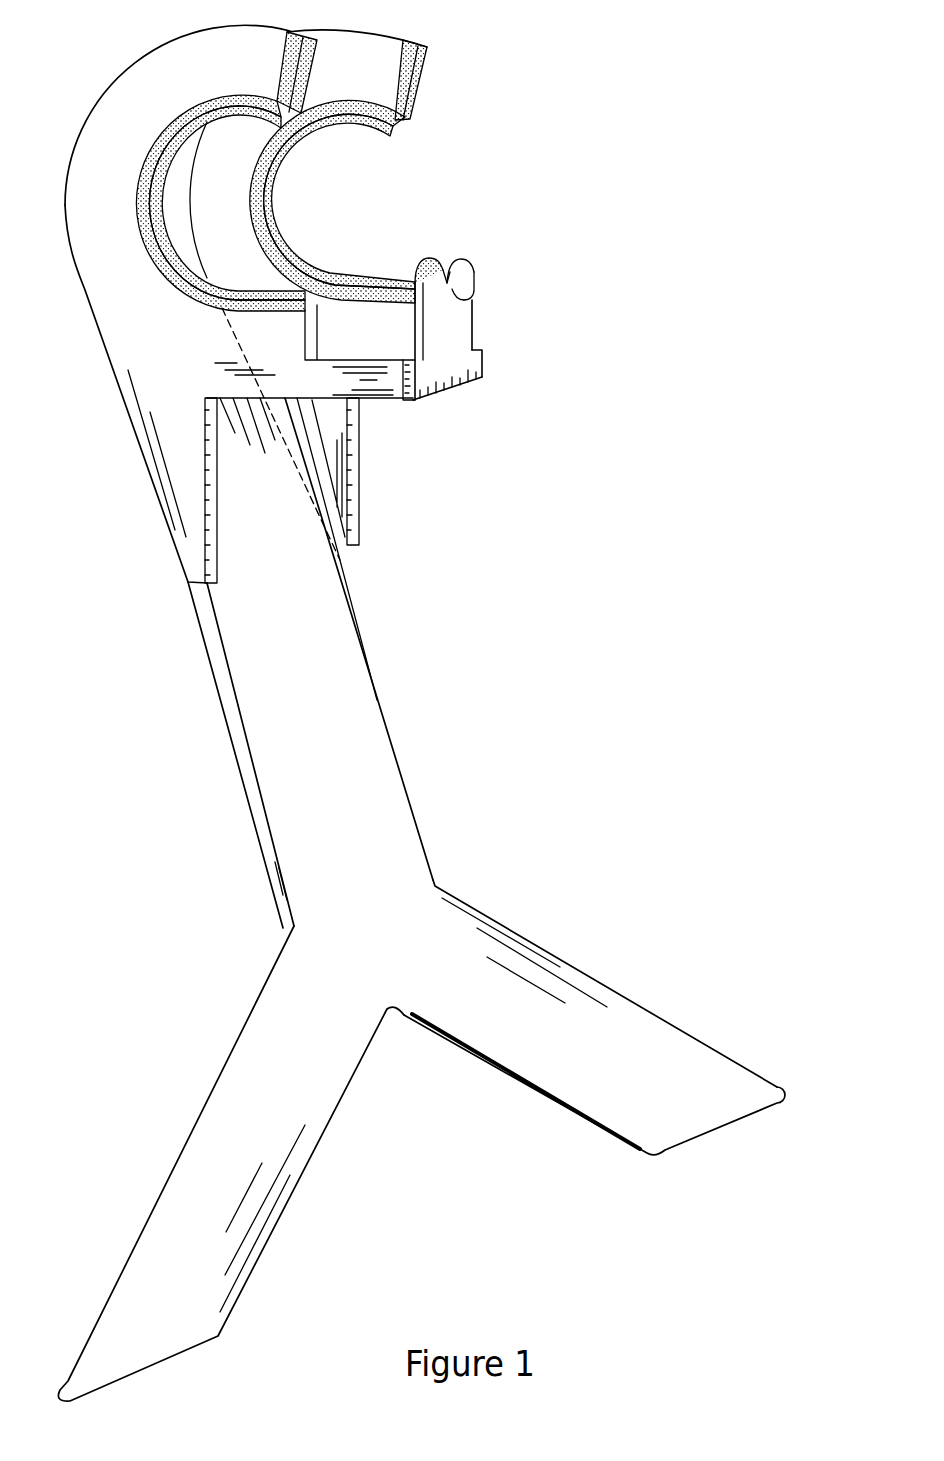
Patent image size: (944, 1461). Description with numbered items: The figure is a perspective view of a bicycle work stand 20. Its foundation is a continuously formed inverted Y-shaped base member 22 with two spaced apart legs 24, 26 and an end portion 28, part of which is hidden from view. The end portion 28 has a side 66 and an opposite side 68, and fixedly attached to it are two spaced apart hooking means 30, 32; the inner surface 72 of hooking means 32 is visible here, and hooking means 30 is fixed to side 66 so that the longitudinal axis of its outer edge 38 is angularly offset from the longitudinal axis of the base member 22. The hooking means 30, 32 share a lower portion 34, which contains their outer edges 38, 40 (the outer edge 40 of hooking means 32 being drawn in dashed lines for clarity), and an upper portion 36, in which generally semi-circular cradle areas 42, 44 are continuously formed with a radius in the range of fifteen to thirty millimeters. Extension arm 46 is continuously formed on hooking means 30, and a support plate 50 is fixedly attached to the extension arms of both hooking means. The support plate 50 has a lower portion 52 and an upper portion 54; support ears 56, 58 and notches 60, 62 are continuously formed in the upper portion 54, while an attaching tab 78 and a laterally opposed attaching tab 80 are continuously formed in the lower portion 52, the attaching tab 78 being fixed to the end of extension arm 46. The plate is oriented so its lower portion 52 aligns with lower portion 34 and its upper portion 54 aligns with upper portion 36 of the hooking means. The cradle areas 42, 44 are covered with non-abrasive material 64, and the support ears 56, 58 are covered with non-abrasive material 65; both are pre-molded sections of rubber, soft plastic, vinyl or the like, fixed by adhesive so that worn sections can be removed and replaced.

The pipe wrench 20 is at (684, 83).
The inverted Y-shaped base member 22 is at (400, 890).
The leg 24 is at (170, 1191).
The leg 26 is at (630, 1010).
The end portion 28 is at (276, 517).
The hooking means 30 is at (119, 78).
The hooking means 32 is at (421, 88).
The lower portion 34 is at (186, 422).
The upper portion 36 is at (119, 217).
The outer edge 38 is at (138, 443).
The outer edge 40 is at (310, 472).
The cradle area 42 is at (213, 290).
The cradle area 44 is at (307, 280).
The extension arm 46 is at (367, 384).
The support plate 50 is at (477, 316).
The lower portion 52 is at (458, 379).
The upper portion 54 is at (458, 329).
The support ear 56 is at (447, 281).
The support ear 58 is at (468, 260).
The notch 60 is at (444, 282).
The notch 62 is at (474, 280).
The non-abrasive material 64 is at (275, 170).
The non-abrasive material 65 is at (473, 291).
The side 66 is at (200, 612).
The opposite side 68 is at (350, 553).
The inner surface 72 is at (372, 320).
The attaching tab 78 is at (417, 398).
The laterally opposed attaching tab 80 is at (485, 353).